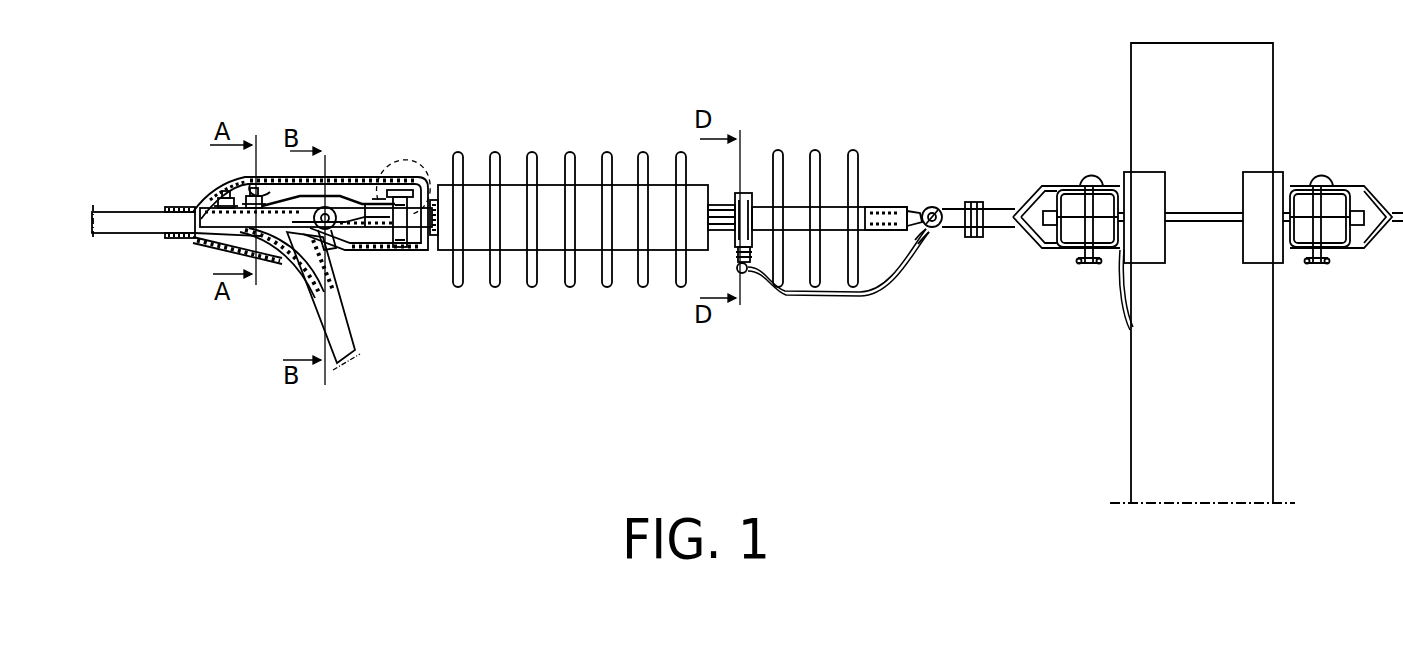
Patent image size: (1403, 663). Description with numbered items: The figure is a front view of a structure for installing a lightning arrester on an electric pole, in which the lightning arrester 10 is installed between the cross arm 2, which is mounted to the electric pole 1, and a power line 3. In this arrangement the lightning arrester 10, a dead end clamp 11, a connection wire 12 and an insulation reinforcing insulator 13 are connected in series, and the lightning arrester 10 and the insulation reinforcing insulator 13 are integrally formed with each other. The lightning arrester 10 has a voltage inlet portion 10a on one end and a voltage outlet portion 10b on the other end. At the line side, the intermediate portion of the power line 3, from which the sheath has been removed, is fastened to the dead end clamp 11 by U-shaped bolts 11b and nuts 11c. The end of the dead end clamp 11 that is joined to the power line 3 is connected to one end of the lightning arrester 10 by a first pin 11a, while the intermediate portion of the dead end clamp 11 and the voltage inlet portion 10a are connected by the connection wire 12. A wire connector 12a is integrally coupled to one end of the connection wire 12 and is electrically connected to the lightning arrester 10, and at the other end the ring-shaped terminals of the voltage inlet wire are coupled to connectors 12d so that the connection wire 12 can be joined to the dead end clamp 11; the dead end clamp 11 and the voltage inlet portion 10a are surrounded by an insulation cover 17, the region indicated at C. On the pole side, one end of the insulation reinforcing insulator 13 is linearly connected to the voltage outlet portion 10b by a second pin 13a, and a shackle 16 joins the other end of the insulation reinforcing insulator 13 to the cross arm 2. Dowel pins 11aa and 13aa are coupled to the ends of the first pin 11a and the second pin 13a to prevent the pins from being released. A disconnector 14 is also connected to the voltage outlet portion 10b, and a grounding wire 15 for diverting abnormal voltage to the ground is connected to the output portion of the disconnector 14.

The electric pole 1 is at (1140, 455).
The cross arm 2 is at (1060, 250).
The power line 3 is at (362, 350).
The lightning arrester 10 is at (515, 192).
The voltage inlet portion 10a is at (400, 250).
The voltage outlet portion 10b is at (743, 200).
The dead end clamp 11 is at (215, 240).
The first pin 11a is at (333, 210).
The dowel pin 11aa is at (331, 247).
The U-shaped bolt 11b is at (232, 258).
The nut 11c is at (207, 190).
The connection wire 12 is at (328, 205).
The wire connector 12a is at (373, 193).
The connector 12d is at (265, 198).
The insulation reinforcing insulator 13 is at (818, 148).
The second pin 13a is at (938, 207).
The dowel pin 13aa is at (933, 229).
The disconnector 14 is at (745, 275).
The grounding wire 15 is at (850, 293).
The shackle 16 is at (1015, 228).
The insulation cover 17 is at (302, 284).
The detail region C is at (418, 160).